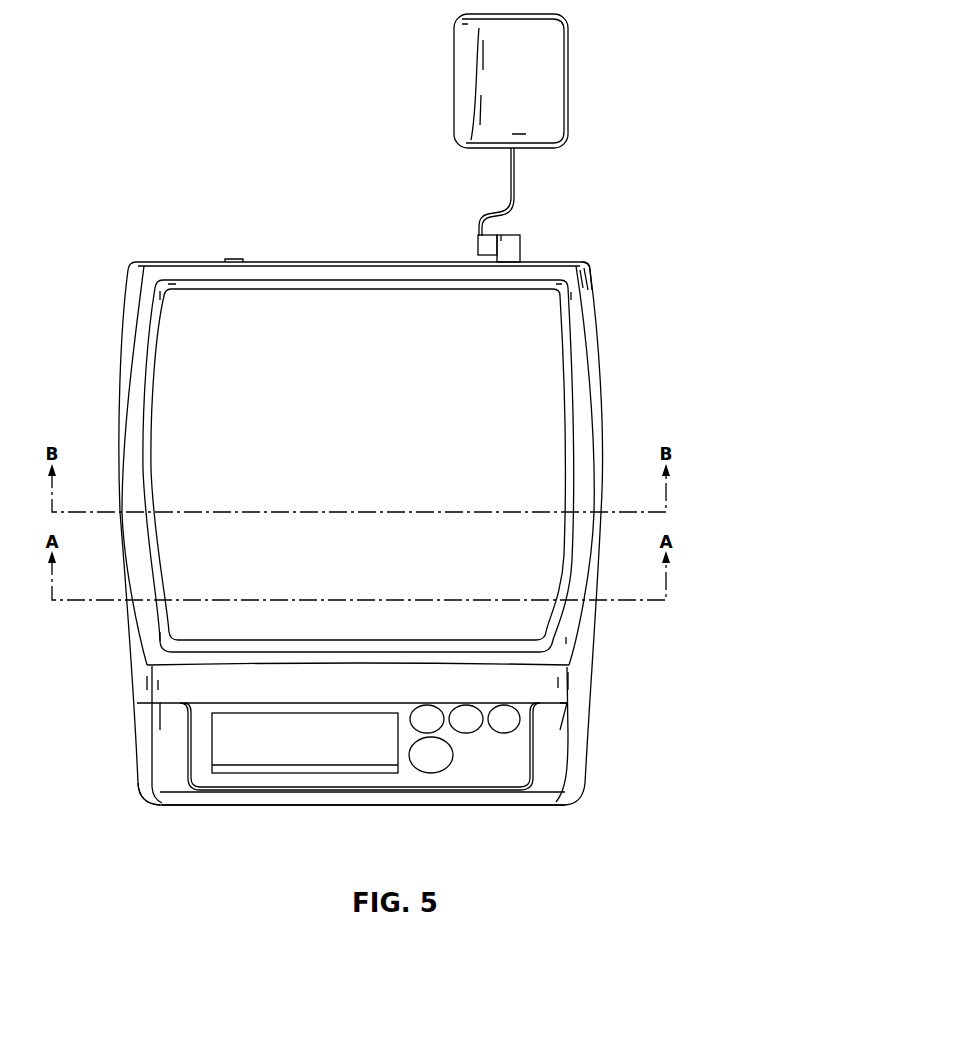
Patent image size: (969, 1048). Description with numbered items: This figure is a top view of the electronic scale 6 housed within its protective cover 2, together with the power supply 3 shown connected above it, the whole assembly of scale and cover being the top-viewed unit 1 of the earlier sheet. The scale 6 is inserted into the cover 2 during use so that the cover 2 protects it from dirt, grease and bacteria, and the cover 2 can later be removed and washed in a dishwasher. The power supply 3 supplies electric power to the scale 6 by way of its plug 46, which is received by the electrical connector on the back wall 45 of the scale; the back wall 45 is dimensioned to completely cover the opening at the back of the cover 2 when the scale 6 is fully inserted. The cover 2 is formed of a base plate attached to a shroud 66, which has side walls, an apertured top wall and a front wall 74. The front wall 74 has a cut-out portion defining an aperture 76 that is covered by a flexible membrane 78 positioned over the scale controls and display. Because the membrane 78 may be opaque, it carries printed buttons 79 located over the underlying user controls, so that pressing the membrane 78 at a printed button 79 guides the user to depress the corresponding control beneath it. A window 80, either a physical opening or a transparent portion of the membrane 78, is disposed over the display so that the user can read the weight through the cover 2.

The weighing platform 1 is at (543, 388).
The cover 2 is at (597, 790).
The power supply 3 is at (575, 78).
The electronic scale 6 is at (594, 251).
The back wall 45 is at (591, 263).
The plug 46 is at (518, 243).
The shroud 66 is at (145, 794).
The front wall 74 is at (542, 781).
The aperture 76 is at (381, 784).
The flexible membrane 78 is at (488, 772).
The printed buttons 79 is at (437, 748).
The window 80 is at (277, 766).